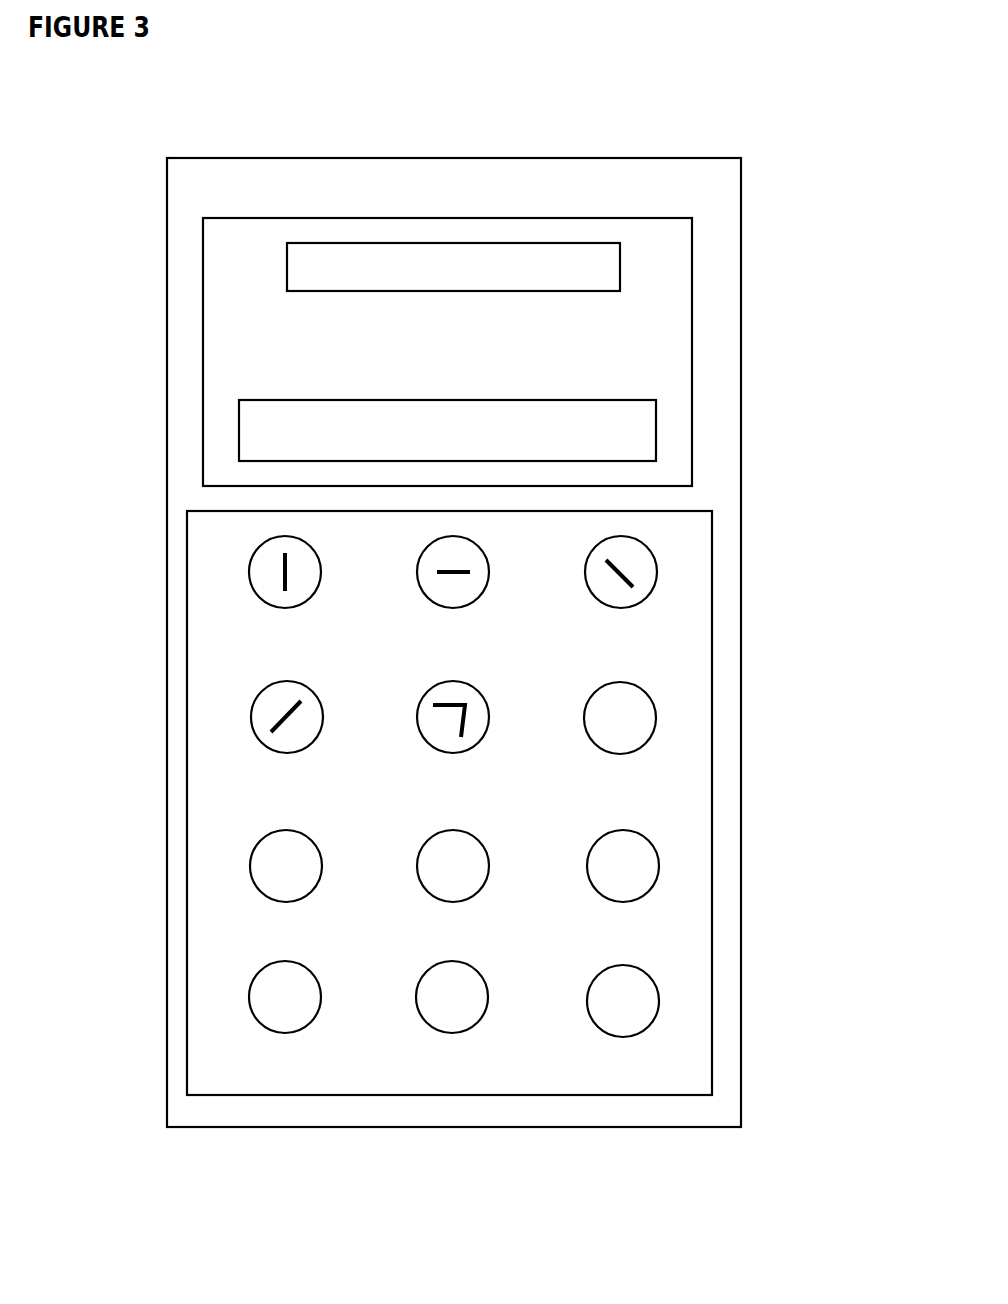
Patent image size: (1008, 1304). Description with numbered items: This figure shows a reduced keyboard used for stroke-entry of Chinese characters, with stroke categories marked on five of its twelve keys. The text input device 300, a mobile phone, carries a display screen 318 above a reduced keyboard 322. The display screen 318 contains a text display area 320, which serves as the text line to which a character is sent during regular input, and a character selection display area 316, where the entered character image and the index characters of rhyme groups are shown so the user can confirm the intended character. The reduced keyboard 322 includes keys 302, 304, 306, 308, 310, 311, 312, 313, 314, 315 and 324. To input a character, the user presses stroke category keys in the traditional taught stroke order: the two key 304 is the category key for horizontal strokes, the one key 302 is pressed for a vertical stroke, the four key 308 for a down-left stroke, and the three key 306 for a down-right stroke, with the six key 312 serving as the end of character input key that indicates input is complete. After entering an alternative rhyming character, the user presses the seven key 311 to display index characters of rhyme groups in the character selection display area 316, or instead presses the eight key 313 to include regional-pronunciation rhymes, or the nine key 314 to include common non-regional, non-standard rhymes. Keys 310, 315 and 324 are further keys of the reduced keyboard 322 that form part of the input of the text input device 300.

The text input device 300 is at (786, 98).
The 1 key 302 is at (250, 563).
The 2 key 304 is at (478, 548).
The 3 key 306 is at (657, 572).
The 4 key 308 is at (256, 738).
The 5 key 310 is at (475, 690).
The 7 key 311 is at (250, 867).
The 6 key 312 is at (638, 718).
The 8 key 313 is at (489, 857).
The 9 key 314 is at (659, 866).
The key 315 is at (659, 1000).
The character selection display area 316 is at (656, 425).
The display screen 318 is at (692, 268).
The text display area 320 is at (313, 243).
The reduced keyboard 322 is at (712, 607).
The key 324 is at (478, 1022).